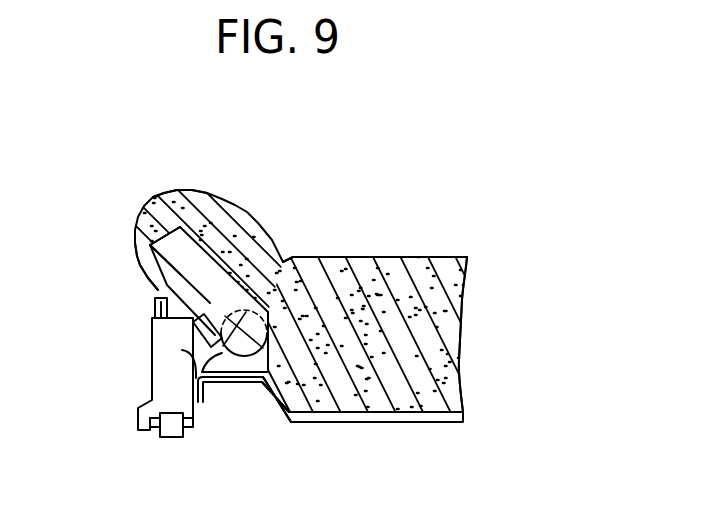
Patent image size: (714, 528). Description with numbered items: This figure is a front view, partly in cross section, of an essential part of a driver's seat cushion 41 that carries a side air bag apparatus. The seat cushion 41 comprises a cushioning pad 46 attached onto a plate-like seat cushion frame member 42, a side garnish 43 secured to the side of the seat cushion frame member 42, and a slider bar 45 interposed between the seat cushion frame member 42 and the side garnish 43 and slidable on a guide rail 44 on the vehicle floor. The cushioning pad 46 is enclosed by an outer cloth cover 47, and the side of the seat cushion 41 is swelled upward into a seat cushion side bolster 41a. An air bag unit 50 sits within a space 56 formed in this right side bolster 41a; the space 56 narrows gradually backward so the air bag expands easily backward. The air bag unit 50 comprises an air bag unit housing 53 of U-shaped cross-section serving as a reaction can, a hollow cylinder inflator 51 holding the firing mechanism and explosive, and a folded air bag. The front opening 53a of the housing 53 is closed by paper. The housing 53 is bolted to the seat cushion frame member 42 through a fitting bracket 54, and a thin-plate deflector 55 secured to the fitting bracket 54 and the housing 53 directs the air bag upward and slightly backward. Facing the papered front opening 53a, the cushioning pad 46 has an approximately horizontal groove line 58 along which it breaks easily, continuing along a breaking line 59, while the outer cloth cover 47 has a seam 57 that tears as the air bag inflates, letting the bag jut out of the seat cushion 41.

The seat cushion 41 is at (442, 215).
The seat cushion side bolster 41a is at (237, 207).
The seat cushion frame member 42 is at (432, 422).
The side garnish 43 is at (151, 332).
The guide rail 44 is at (157, 433).
The slider bar 45 is at (190, 352).
The cushioning pad 46 is at (464, 310).
The outer cloth cover 47 is at (378, 257).
The air bag unit 50 is at (257, 392).
The inflator 51 is at (316, 258).
The air bag unit housing 53 is at (252, 238).
The front opening 53a is at (180, 257).
The fitting bracket 54 is at (222, 355).
The deflector 55 is at (155, 292).
The space 56 is at (262, 400).
The seam 57 is at (178, 192).
The groove line 58 is at (146, 238).
The breaking line 59 is at (200, 215).